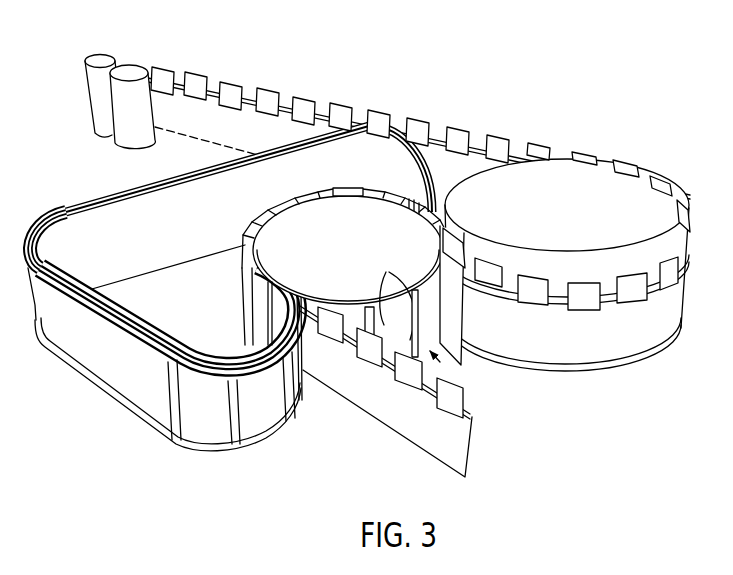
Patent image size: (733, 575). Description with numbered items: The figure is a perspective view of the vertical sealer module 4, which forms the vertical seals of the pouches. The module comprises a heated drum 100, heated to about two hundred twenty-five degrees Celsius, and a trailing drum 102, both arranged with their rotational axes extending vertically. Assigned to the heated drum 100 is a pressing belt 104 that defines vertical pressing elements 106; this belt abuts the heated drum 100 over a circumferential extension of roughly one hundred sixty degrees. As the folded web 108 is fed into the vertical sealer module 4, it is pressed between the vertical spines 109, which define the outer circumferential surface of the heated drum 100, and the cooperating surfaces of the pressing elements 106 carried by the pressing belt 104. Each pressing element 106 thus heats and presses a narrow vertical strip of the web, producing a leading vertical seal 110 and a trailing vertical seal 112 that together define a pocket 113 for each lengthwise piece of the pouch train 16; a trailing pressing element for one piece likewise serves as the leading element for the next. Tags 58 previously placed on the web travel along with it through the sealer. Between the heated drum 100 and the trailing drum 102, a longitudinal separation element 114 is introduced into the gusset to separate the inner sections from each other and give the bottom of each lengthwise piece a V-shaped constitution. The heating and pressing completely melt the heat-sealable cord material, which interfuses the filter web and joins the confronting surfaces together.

The vertical sealer module 4 is at (405, 60).
The pouch train 16 is at (268, 71).
The tag 58 is at (303, 108).
The heated drum 100 is at (292, 268).
The trailing drum 102 is at (624, 198).
The pressing belt 104 is at (76, 195).
The pressing elements 106 is at (172, 442).
The folded web 108 is at (416, 460).
The vertical spines 109 is at (345, 275).
The leading vertical seal 110 is at (657, 342).
The trailing vertical seal 112 is at (615, 343).
The pocket 113 is at (250, 92).
The longitudinal separation element 114 is at (463, 360).